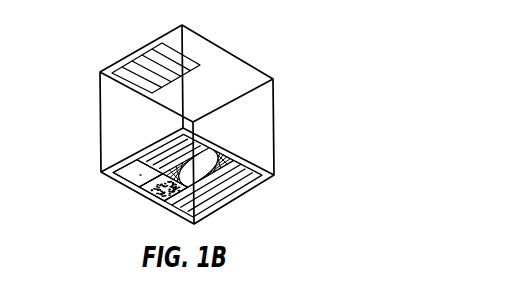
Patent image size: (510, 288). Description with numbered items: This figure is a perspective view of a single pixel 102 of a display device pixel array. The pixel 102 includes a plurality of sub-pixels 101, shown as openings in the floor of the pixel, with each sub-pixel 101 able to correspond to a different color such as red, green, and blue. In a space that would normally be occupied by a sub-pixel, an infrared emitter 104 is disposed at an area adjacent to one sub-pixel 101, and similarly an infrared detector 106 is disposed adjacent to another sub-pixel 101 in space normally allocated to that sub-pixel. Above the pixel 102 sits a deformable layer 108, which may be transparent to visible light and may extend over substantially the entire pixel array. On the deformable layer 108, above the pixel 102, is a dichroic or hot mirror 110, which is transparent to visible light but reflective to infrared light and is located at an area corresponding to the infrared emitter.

The pixel 102 is at (306, 203).
The deformable layer 108 is at (276, 95).
The dichroic mirror 110 is at (147, 60).
The sub-pixel 101 is at (191, 135).
The infrared emitter 104 is at (113, 170).
The infrared detector 106 is at (147, 189).